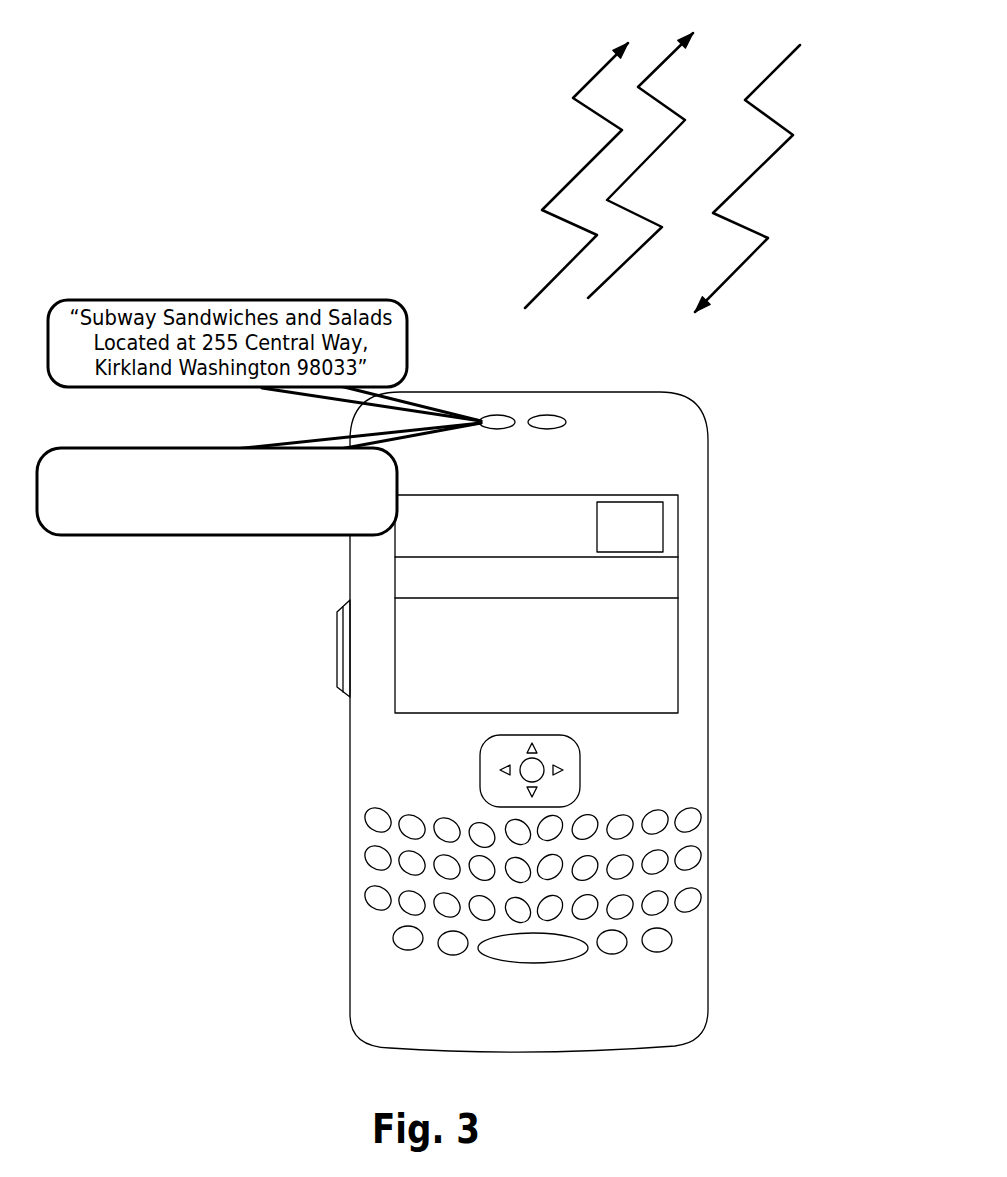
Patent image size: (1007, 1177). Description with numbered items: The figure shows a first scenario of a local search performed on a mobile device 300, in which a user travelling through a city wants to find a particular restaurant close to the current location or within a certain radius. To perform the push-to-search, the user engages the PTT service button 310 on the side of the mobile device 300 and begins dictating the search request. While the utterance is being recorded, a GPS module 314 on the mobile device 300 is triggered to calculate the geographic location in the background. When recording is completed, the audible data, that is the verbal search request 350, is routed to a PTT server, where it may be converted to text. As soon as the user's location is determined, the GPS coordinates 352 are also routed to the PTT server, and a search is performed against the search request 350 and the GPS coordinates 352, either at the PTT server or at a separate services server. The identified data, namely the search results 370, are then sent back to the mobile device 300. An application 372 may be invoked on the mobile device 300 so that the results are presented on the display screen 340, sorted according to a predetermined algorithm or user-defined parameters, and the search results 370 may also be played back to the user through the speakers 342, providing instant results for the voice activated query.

The mobile device 300 is at (128, 104).
The PTT service button 310 is at (337, 660).
The GPS module 314 is at (660, 533).
The display screen 340 is at (670, 583).
The speakers 342 is at (484, 404).
The verbal search request 350 is at (565, 183).
The GPS coordinates 352 is at (665, 103).
The search results 370 is at (730, 193).
The application 372 is at (460, 582).